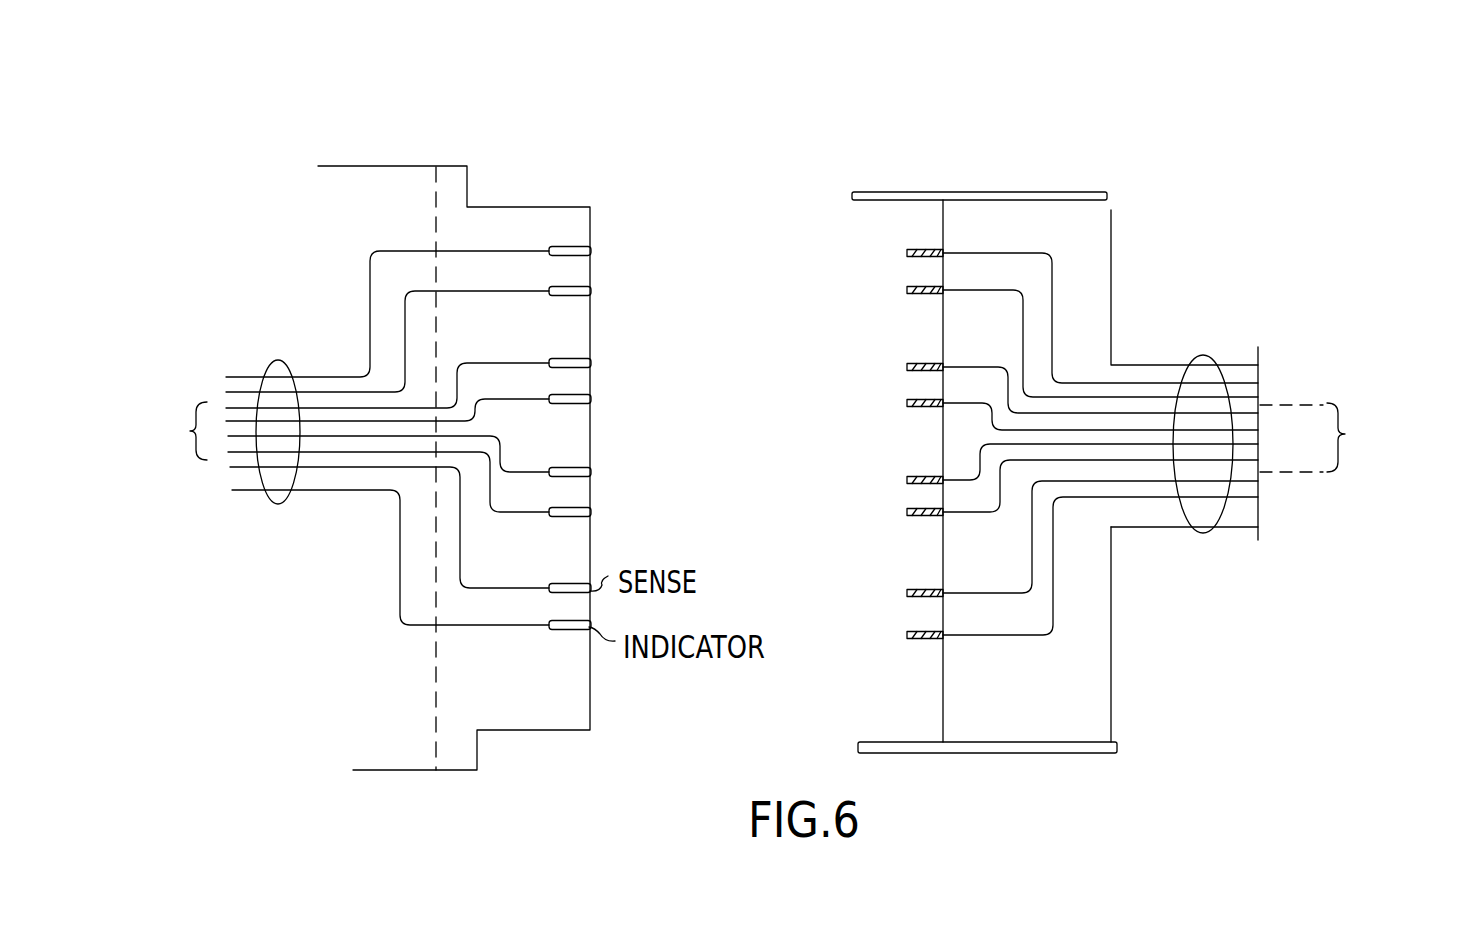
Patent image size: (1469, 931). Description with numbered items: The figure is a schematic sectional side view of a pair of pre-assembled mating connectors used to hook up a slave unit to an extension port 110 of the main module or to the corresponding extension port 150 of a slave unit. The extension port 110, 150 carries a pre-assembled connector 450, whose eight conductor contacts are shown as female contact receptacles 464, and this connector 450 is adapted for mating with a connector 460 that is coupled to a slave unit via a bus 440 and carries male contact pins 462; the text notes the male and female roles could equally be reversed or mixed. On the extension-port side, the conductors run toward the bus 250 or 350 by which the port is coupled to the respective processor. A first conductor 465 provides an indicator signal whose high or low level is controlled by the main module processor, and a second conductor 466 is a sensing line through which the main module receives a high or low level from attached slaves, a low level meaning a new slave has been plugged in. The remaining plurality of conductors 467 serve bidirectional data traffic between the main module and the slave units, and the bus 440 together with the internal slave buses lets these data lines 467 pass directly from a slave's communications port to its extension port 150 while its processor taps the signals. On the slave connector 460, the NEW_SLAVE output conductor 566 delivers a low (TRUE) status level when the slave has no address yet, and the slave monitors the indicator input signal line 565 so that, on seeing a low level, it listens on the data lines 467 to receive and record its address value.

The extension port 110 is at (383, 418).
The extension port 150 is at (443, 92).
The pre-assembled connector 450 is at (517, 207).
The female contact receptacles 464 is at (590, 291).
The conductors 467 is at (766, 381).
The bus 250 is at (276, 459).
The bus 350 is at (342, 523).
The second conductor 466 is at (466, 586).
The first conductor 465 is at (447, 627).
The connector 460 is at (912, 192).
The male contact pins 462 is at (906, 255).
The bus 440 is at (1203, 356).
The NEW_SLAVE output conductor 566 is at (1243, 484).
The indicator input signal line 565 is at (1233, 503).